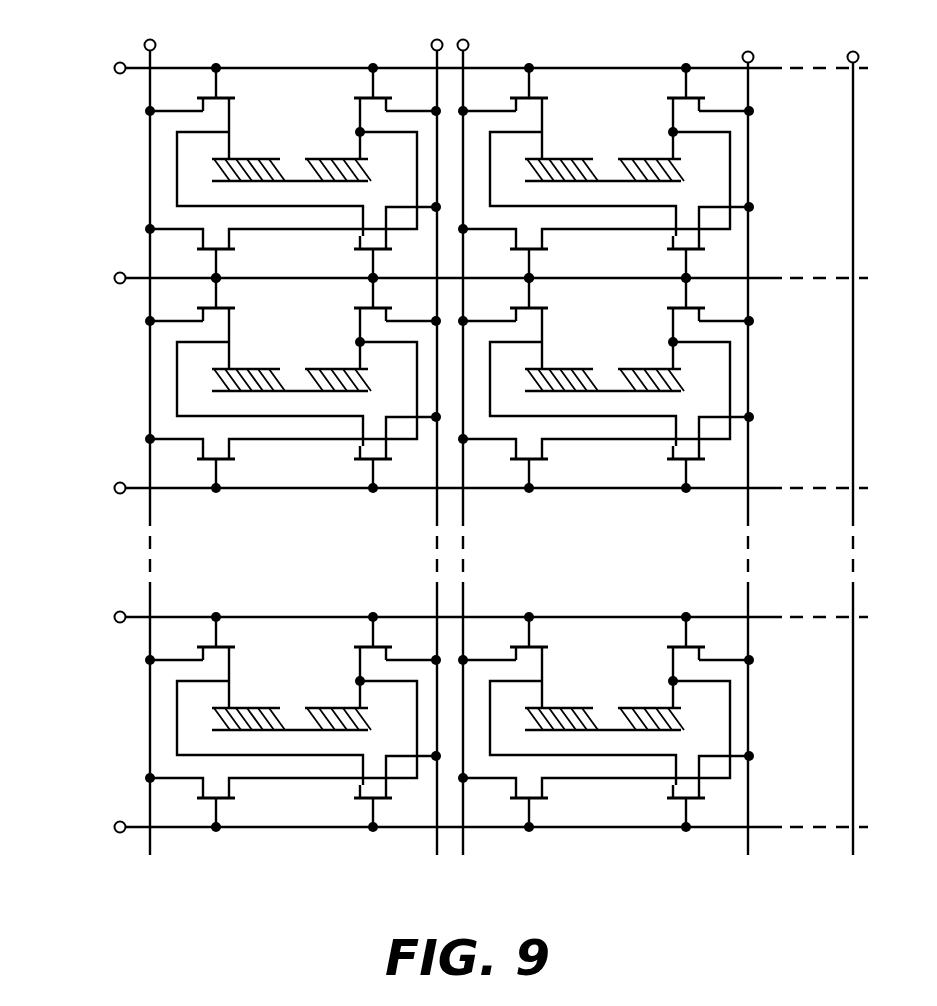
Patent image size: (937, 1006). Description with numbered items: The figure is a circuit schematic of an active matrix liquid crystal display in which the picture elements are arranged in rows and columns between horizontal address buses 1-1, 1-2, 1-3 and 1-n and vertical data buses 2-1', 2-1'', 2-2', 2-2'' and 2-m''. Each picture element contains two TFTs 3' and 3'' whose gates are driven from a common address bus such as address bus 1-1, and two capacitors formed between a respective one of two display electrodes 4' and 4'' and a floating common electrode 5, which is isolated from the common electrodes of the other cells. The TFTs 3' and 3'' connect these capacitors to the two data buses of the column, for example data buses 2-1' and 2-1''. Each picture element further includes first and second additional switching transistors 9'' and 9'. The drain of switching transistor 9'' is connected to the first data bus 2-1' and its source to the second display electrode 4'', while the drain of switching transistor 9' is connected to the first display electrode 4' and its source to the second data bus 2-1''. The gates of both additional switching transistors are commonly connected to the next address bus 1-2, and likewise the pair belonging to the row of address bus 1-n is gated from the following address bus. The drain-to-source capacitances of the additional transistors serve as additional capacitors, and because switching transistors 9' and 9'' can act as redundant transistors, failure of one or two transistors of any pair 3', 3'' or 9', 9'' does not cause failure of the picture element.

The TFT 3' is at (236, 71).
The TFT 3'' is at (358, 71).
The first display electrode 4' is at (405, 140).
The second display electrode 4'' is at (494, 140).
The common electrode 5 is at (298, 178).
The second additional switching transistor 9' is at (337, 257).
The first additional switching transistor 9'' is at (161, 252).
The address bus 1-1 is at (470, 67).
The common address bus 1-2 is at (468, 277).
The address bus 1-3 is at (470, 487).
The address bus 1-n is at (470, 616).
The first data bus 2-1' is at (155, 432).
The second data bus 2-1'' is at (415, 427).
The first data bus 2-2' is at (495, 427).
The second data bus 2-2'' is at (756, 437).
The second data bus 2-m'' is at (857, 437).